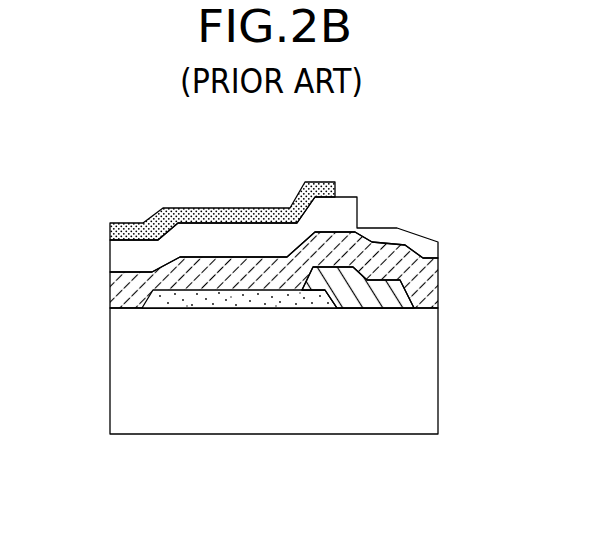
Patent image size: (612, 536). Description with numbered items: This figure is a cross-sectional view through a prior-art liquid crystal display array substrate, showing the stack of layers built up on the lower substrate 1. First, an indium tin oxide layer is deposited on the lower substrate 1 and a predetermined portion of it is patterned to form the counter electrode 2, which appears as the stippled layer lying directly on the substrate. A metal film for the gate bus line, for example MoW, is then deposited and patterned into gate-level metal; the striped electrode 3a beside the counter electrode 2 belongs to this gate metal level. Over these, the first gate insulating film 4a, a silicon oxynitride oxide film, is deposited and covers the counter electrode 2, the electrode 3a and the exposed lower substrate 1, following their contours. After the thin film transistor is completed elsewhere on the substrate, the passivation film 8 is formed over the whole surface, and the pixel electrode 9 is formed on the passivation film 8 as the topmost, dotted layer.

The lower substrate 1 is at (422, 392).
The counter electrode 2 is at (233, 296).
The gate pad electrode 3a is at (363, 298).
The first gate insulating film 4a is at (127, 290).
The passivation film 8 is at (123, 255).
The pixel electrode 9 is at (108, 233).